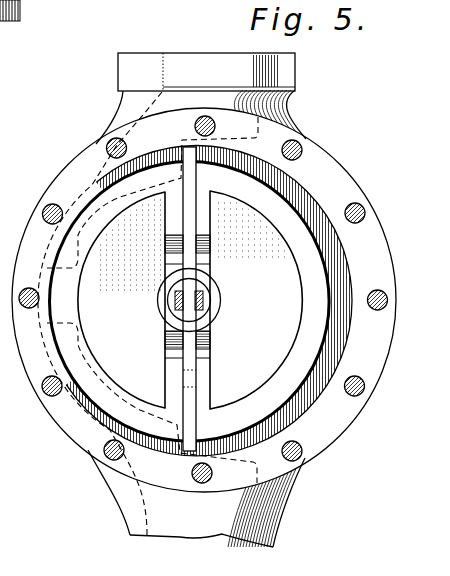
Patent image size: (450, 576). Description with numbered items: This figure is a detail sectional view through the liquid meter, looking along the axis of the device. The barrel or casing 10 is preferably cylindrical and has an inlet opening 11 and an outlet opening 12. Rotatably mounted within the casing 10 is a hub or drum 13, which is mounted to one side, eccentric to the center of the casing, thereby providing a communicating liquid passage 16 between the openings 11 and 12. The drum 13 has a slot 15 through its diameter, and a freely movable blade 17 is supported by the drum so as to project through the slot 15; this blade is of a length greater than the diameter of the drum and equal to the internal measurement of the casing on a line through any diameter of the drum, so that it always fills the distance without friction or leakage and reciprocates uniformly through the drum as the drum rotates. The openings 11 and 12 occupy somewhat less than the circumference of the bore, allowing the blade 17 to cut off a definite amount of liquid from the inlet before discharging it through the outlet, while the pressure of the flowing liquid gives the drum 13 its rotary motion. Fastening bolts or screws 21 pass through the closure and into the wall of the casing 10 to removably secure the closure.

The barrel or casing 10 is at (64, 172).
The inlet opening 11 is at (190, 73).
The outlet opening 12 is at (199, 522).
The hub or drum 13 is at (303, 303).
The slot 15 is at (199, 233).
The liquid passage 16 is at (335, 250).
The blade 17 is at (190, 407).
The fastening bolts or screws 21 is at (173, 127).